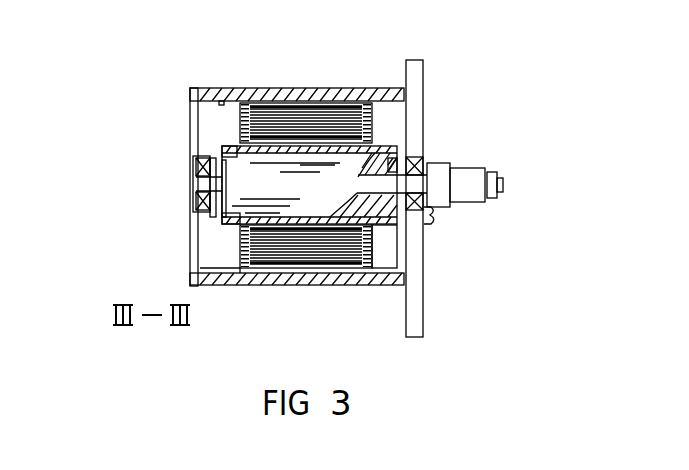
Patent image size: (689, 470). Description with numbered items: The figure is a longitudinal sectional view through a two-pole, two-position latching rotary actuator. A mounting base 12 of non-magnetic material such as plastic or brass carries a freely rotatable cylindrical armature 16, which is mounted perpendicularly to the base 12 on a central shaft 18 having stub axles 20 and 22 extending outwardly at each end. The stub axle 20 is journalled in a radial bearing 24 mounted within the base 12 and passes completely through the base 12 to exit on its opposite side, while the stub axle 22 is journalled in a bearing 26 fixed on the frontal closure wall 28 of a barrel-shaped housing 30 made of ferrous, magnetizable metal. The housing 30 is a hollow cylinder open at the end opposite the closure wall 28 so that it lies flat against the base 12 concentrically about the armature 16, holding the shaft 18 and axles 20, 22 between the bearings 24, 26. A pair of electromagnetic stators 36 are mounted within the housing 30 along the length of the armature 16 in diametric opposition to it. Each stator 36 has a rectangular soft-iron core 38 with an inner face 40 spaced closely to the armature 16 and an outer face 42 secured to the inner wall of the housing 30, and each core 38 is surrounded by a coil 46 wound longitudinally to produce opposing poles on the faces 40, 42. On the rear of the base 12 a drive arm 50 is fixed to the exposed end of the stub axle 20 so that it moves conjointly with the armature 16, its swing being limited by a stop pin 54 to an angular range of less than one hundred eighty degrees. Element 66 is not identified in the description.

The mounting base 12 is at (418, 100).
The cylindrical armature 16 is at (238, 198).
The central shaft 18 is at (385, 187).
The stub axle 20 is at (415, 182).
The stub axle 22 is at (192, 187).
The radial bearing 24 is at (424, 152).
The bearing 26 is at (192, 158).
The frontal closure wall 28 is at (192, 118).
The barrel-shaped housing 30 is at (232, 98).
The electromagnetic stator 36 is at (338, 108).
The rectangular core 38 is at (303, 100).
The inner face 40 is at (226, 224).
The outer face 42 is at (223, 101).
The coil 46 is at (242, 130).
The drive arm 50 is at (442, 207).
The stop pin 54 is at (428, 225).
The encoder 66 is at (472, 170).